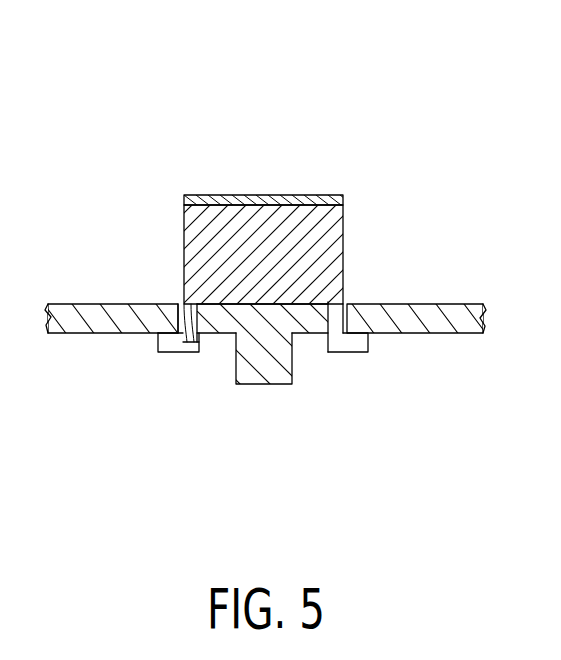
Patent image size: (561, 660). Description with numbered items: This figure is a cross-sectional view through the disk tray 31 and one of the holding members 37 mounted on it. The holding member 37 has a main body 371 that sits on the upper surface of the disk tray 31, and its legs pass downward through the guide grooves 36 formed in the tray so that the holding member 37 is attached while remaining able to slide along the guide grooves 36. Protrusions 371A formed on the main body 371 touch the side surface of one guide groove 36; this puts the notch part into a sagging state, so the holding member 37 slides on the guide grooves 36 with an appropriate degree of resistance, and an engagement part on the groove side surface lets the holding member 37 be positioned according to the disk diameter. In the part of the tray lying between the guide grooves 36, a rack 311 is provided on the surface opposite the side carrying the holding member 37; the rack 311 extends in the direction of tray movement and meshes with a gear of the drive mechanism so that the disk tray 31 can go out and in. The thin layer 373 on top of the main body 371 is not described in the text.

The disk tray 31 is at (432, 304).
The rack 311 is at (278, 383).
The guide groove 36 is at (191, 348).
The holding member 37 is at (275, 226).
The main body 371 is at (200, 237).
The protrusion 371A is at (175, 352).
The top layer of fastening member 373 is at (278, 195).